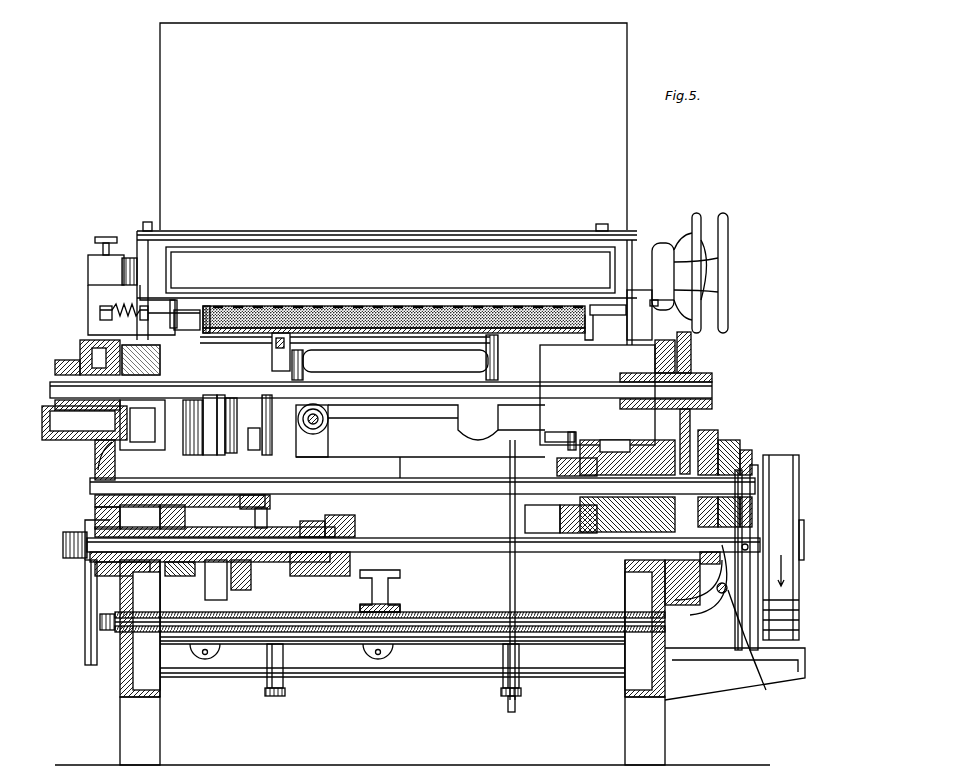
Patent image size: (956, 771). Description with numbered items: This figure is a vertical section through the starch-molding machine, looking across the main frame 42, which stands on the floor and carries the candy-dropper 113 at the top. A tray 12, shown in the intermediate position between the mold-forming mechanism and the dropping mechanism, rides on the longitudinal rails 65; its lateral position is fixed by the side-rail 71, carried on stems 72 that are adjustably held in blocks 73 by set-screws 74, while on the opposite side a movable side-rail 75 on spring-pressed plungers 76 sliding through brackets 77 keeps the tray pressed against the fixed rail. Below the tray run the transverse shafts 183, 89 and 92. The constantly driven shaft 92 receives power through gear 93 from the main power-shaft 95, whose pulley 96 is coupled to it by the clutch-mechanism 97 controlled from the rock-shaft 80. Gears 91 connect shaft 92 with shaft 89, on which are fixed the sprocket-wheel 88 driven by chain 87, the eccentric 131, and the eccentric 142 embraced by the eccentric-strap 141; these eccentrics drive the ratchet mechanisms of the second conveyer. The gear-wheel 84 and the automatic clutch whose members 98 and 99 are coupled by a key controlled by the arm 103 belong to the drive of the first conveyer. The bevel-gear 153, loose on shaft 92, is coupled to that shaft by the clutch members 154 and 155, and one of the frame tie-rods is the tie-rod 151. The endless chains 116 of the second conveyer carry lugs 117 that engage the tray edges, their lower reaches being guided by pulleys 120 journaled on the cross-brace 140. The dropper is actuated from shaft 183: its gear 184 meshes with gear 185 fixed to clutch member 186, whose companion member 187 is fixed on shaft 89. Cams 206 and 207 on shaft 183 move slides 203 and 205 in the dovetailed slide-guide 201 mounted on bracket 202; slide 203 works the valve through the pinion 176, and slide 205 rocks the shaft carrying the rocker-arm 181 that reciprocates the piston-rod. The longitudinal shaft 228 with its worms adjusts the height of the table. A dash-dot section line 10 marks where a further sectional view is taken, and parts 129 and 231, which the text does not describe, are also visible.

The section line 10 is at (238, 600).
The starch-tray 12 is at (438, 310).
The main frame 42 is at (392, 731).
The longitudinal rails 65 is at (295, 335).
The side-rail 71 is at (595, 320).
The stems 72 is at (622, 308).
The blocks 73 is at (639, 315).
The set-screws 74 is at (657, 310).
The movable side-rail 75 is at (174, 311).
The spring-pressed plungers 76 is at (185, 330).
The brackets 77 is at (100, 312).
The rock-shaft 80 is at (735, 647).
The gear-wheel 84 is at (210, 395).
The chain 87 is at (240, 440).
The sprocket-wheel 88 is at (240, 461).
The transverse shaft 89 is at (430, 478).
The gears 91 is at (186, 513).
The transverse shaft 92 is at (425, 538).
The gear 93 is at (85, 600).
The main power-shaft 95 is at (715, 612).
The pulley 96 is at (783, 547).
The clutch-mechanism 97 is at (750, 545).
The clutch-member 98 is at (222, 395).
The second clutch-member 99 is at (193, 400).
The arm 103 is at (175, 445).
The candy-dropper 113 is at (393, 126).
The endless chains 116 is at (278, 333).
The lugs 117 is at (513, 712).
The pulleys 120 is at (284, 686).
The collar 129 is at (708, 430).
The eccentric 131 is at (752, 452).
The cross-brace 140 is at (432, 678).
The eccentric-strap 141 is at (560, 460).
The eccentric 142 is at (558, 521).
The tie-rod 151 is at (434, 612).
The bevel-gear 153 is at (262, 600).
The clutch member 154 is at (315, 570).
The clutch member 155 is at (344, 520).
The pinion 176 is at (129, 255).
The rocker-arm 181 is at (90, 265).
The shaft 183 is at (712, 390).
The gear 184 is at (692, 356).
The gear 185 is at (720, 445).
The clutch member 186 is at (640, 445).
The clutch member 187 is at (572, 432).
The slide-guide 201 is at (95, 462).
The bracket 202 is at (70, 440).
The slide 203 is at (100, 480).
The slide 205 is at (85, 345).
The cam 206 is at (141, 360).
The cam 207 is at (72, 363).
The shaft 228 is at (330, 430).
The support 231 is at (484, 372).